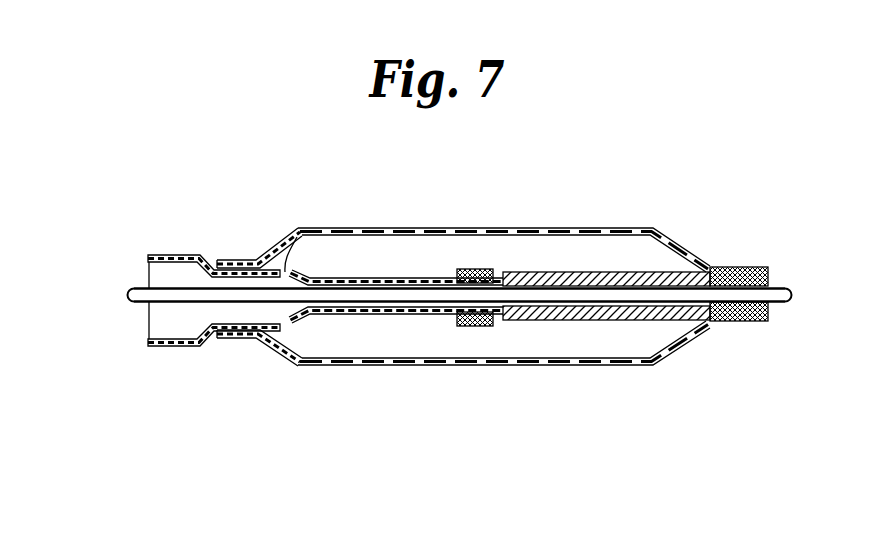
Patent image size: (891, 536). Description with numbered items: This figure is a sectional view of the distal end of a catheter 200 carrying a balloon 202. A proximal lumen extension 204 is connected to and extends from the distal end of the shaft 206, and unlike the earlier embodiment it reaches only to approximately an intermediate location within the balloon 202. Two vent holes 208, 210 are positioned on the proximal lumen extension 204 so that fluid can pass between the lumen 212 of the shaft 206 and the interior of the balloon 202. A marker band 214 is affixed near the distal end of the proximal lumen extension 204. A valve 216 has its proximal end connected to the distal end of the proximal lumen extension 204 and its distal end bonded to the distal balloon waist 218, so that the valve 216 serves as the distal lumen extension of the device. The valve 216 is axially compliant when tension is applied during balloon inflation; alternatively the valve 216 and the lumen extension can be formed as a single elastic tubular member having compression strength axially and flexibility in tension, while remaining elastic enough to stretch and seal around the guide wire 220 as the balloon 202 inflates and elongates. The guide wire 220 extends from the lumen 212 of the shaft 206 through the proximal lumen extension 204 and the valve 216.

The catheter 200 is at (556, 378).
The balloon 202 is at (562, 229).
The proximal lumen extension 204 is at (393, 358).
The shaft 206 is at (177, 254).
The vent hole 208 is at (308, 228).
The vent hole 210 is at (283, 330).
The lumen 212 is at (147, 272).
The marker band 214 is at (487, 270).
The valve 216 is at (631, 269).
The distal balloon waist 218 is at (753, 312).
The guide wire 220 is at (773, 292).